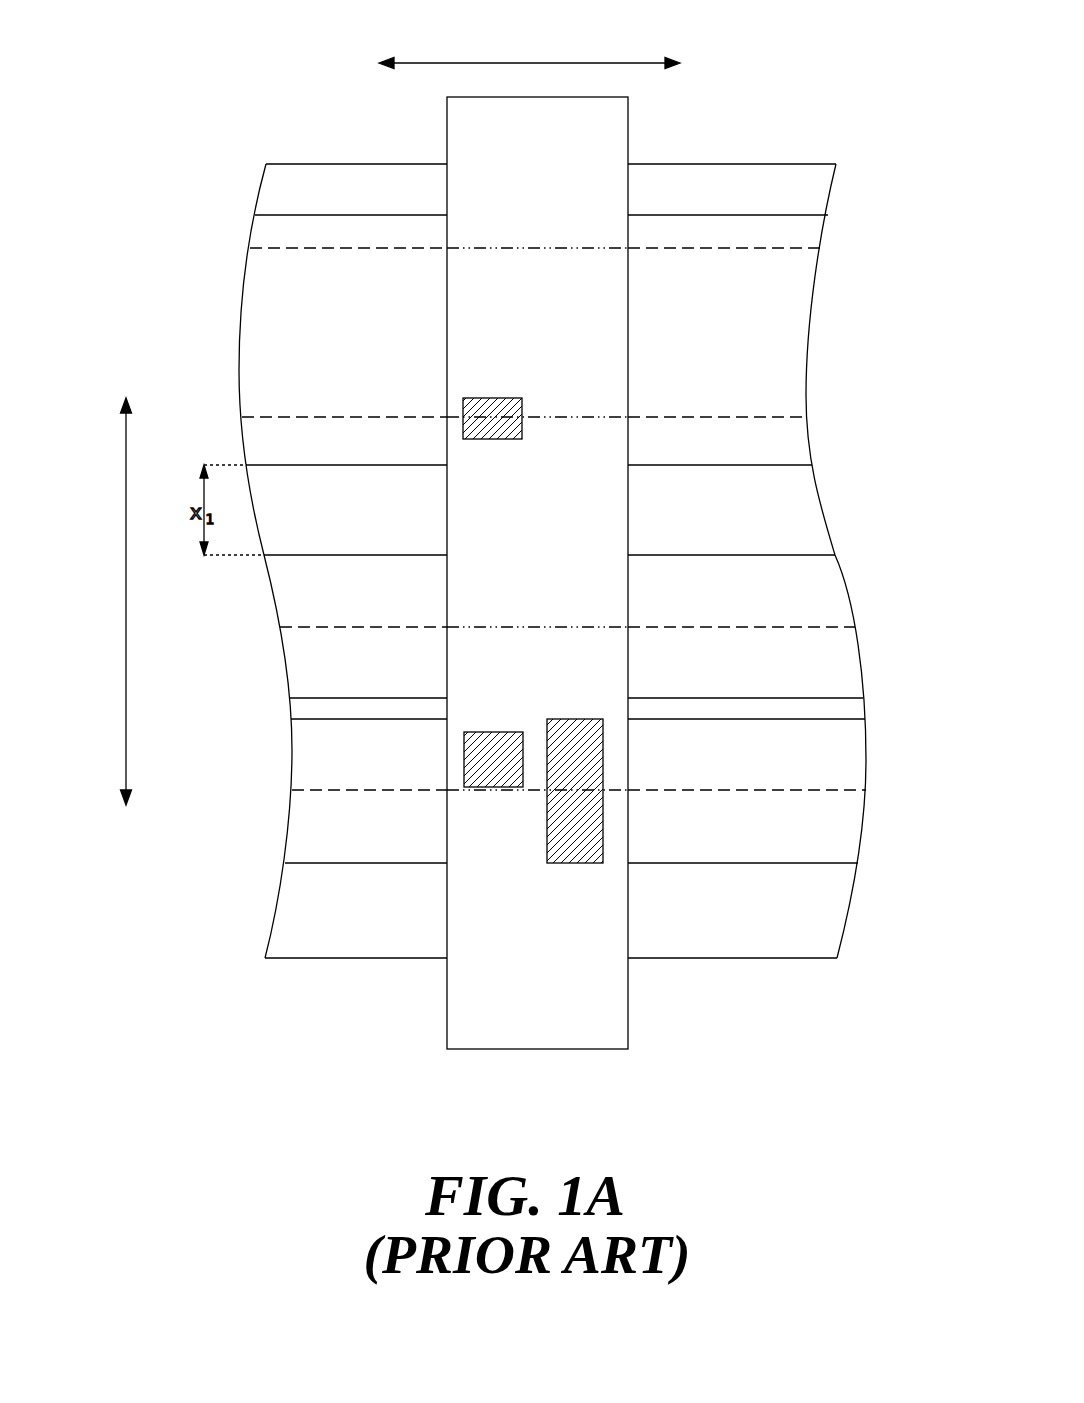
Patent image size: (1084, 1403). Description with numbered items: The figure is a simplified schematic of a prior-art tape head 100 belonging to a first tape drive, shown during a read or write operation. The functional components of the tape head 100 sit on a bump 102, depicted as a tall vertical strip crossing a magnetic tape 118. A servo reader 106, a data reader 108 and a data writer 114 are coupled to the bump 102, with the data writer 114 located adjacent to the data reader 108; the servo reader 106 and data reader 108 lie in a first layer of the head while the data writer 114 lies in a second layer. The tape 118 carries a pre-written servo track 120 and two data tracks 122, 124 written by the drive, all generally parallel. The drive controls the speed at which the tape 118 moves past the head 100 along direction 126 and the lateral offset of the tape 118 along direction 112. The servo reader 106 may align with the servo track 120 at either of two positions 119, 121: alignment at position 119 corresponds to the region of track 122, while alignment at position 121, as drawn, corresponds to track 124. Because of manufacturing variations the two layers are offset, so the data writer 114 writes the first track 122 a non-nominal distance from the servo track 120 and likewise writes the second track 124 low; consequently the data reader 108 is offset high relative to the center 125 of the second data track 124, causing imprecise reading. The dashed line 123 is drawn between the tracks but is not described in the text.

The tape head 100 is at (178, 288).
The bump 102 is at (562, 1026).
The servo reader 106 is at (463, 425).
The data reader 108 is at (464, 750).
The lateral offset direction 112 is at (125, 592).
The data writer 114 is at (603, 762).
The magnetic tape 118 is at (812, 190).
The first servo-reader position 119 is at (792, 248).
The servo track 120 is at (777, 353).
The second servo-reader position 121 is at (788, 417).
The first data track 122 is at (802, 575).
The boundary line 123 is at (808, 627).
The second data track 124 is at (835, 735).
The center of second data track 125 is at (822, 790).
The tape movement direction 126 is at (538, 63).